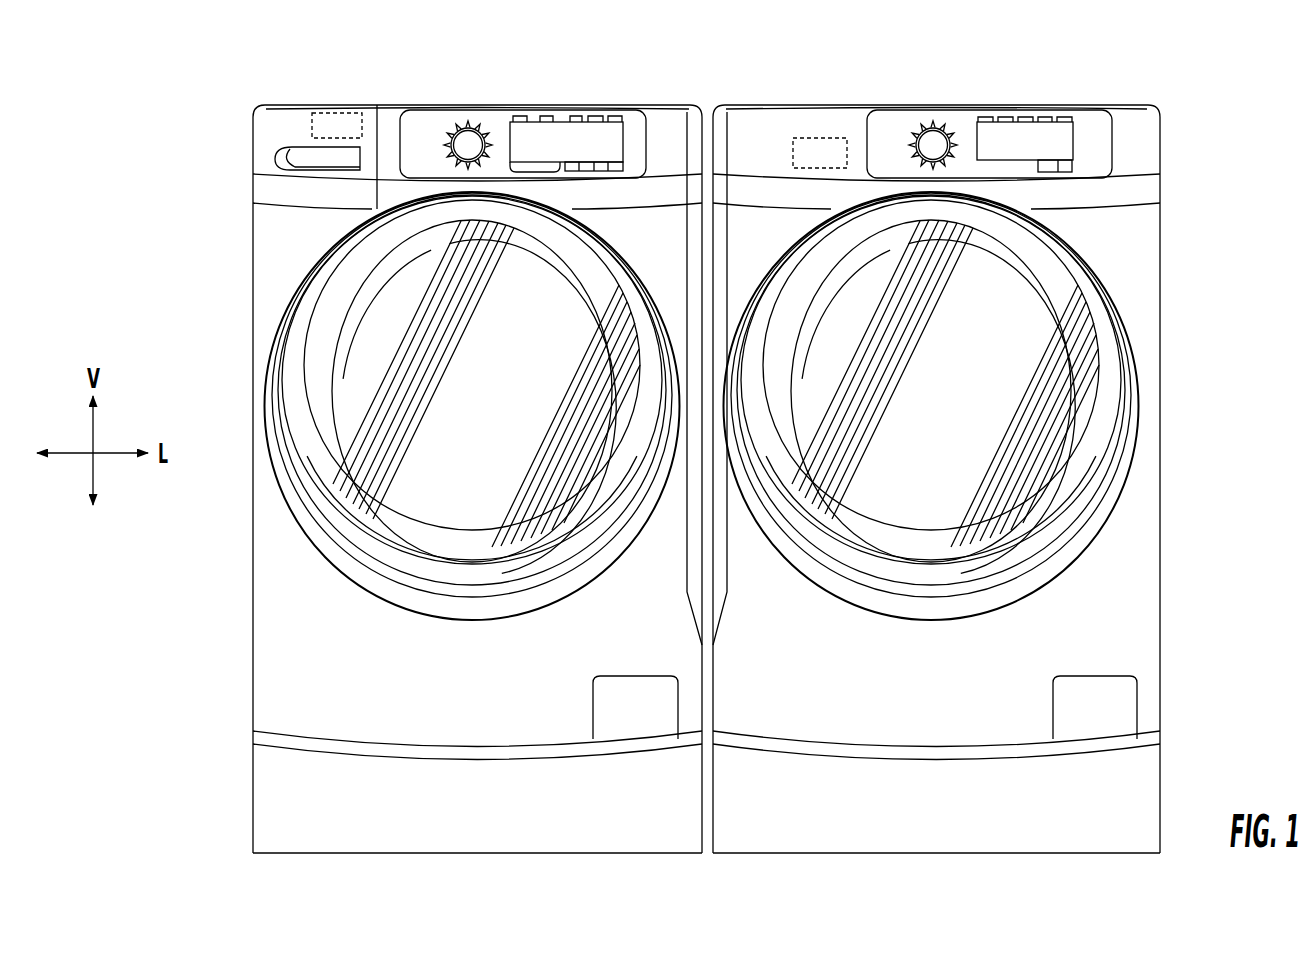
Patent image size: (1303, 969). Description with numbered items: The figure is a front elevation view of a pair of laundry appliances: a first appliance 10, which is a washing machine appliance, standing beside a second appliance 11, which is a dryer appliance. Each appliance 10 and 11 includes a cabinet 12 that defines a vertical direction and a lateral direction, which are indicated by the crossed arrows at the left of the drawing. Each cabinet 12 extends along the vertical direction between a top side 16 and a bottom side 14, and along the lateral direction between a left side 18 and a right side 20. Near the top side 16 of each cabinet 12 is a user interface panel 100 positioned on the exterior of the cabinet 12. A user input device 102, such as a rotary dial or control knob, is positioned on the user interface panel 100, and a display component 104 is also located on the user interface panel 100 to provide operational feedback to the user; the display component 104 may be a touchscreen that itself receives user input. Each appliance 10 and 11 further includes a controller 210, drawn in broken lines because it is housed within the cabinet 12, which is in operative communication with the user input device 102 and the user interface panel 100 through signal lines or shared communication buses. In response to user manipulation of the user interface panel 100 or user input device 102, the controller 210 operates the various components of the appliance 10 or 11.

The first appliance 10 is at (229, 80).
The second appliance 11 is at (1208, 127).
The cabinet 12 is at (280, 640).
The bottom side 14 is at (347, 857).
The top side 16 is at (303, 90).
The left side 18 is at (250, 790).
The right side 20 is at (692, 865).
The user interface panel 100 is at (503, 118).
The user input device 102 is at (465, 134).
The display component 104 is at (594, 132).
The controller 210 is at (341, 112).